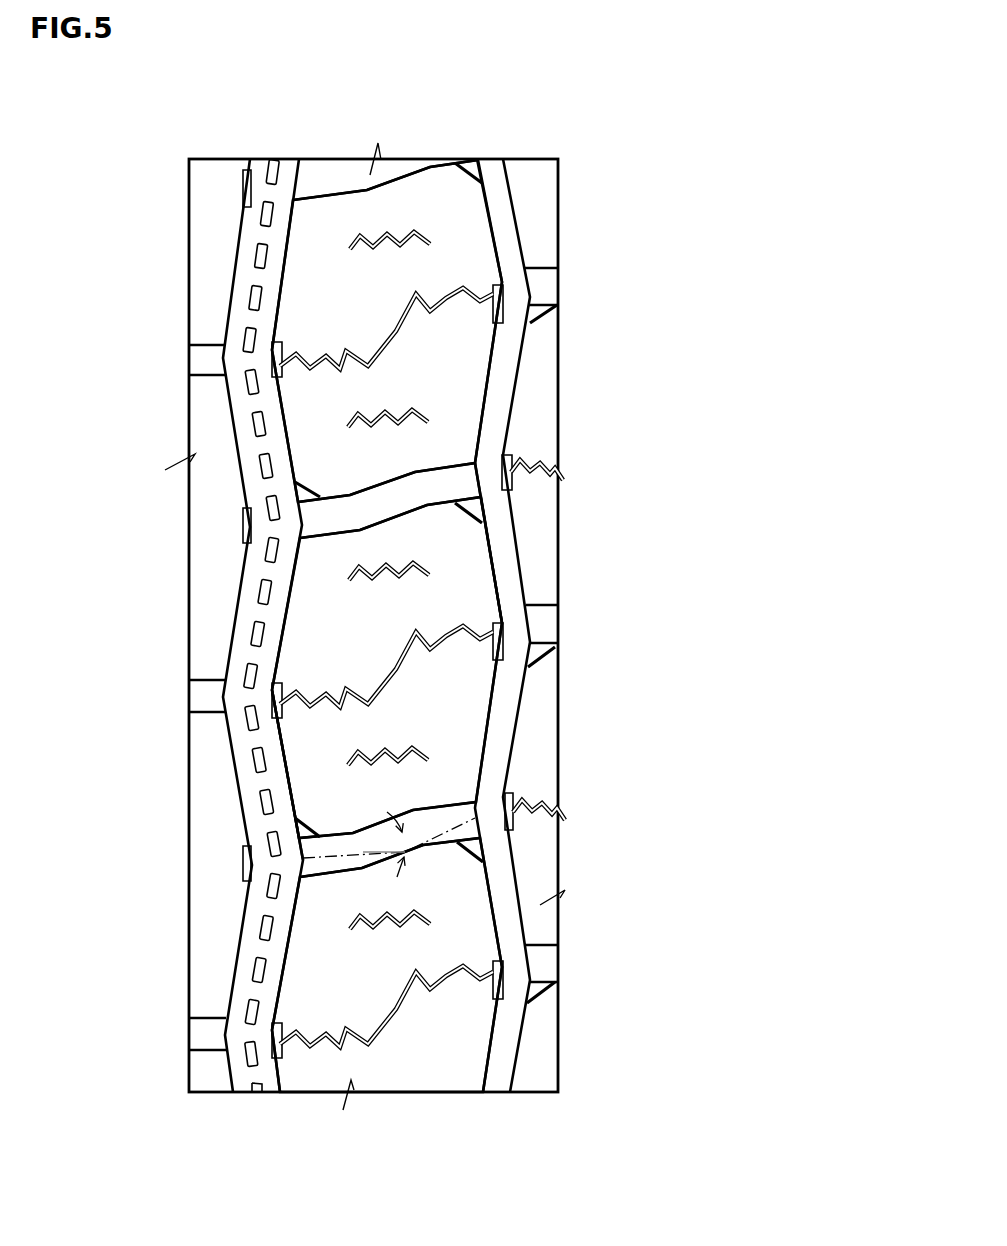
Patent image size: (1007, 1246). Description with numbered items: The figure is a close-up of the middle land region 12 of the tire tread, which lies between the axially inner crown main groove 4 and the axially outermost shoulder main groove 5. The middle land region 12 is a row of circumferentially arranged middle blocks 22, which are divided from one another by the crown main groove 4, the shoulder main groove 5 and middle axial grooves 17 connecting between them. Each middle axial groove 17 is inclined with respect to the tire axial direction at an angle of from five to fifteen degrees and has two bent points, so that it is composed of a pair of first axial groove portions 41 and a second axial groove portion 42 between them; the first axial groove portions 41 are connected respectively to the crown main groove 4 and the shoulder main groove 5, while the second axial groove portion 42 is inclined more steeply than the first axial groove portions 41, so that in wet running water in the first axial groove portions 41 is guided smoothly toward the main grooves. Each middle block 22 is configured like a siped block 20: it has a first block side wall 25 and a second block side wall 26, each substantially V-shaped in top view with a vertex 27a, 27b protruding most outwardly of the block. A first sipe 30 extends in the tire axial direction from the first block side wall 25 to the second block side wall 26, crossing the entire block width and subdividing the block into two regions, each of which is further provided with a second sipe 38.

The crown main groove 4 is at (500, 210).
The shoulder main groove 5 is at (292, 190).
The middle land region 12 is at (410, 210).
The middle axial groove 17 is at (658, 330).
The siped block 20 is at (442, 350).
The middle block 22 is at (413, 707).
The first block side wall 25 is at (495, 580).
The second block side wall 26 is at (277, 738).
The vertex 27a is at (505, 643).
The vertex 27b is at (278, 710).
The first sipe 30 is at (385, 665).
The second sipe 38 is at (370, 575).
The first axial groove portion 41 is at (327, 515).
The second axial groove portion 42 is at (388, 503).